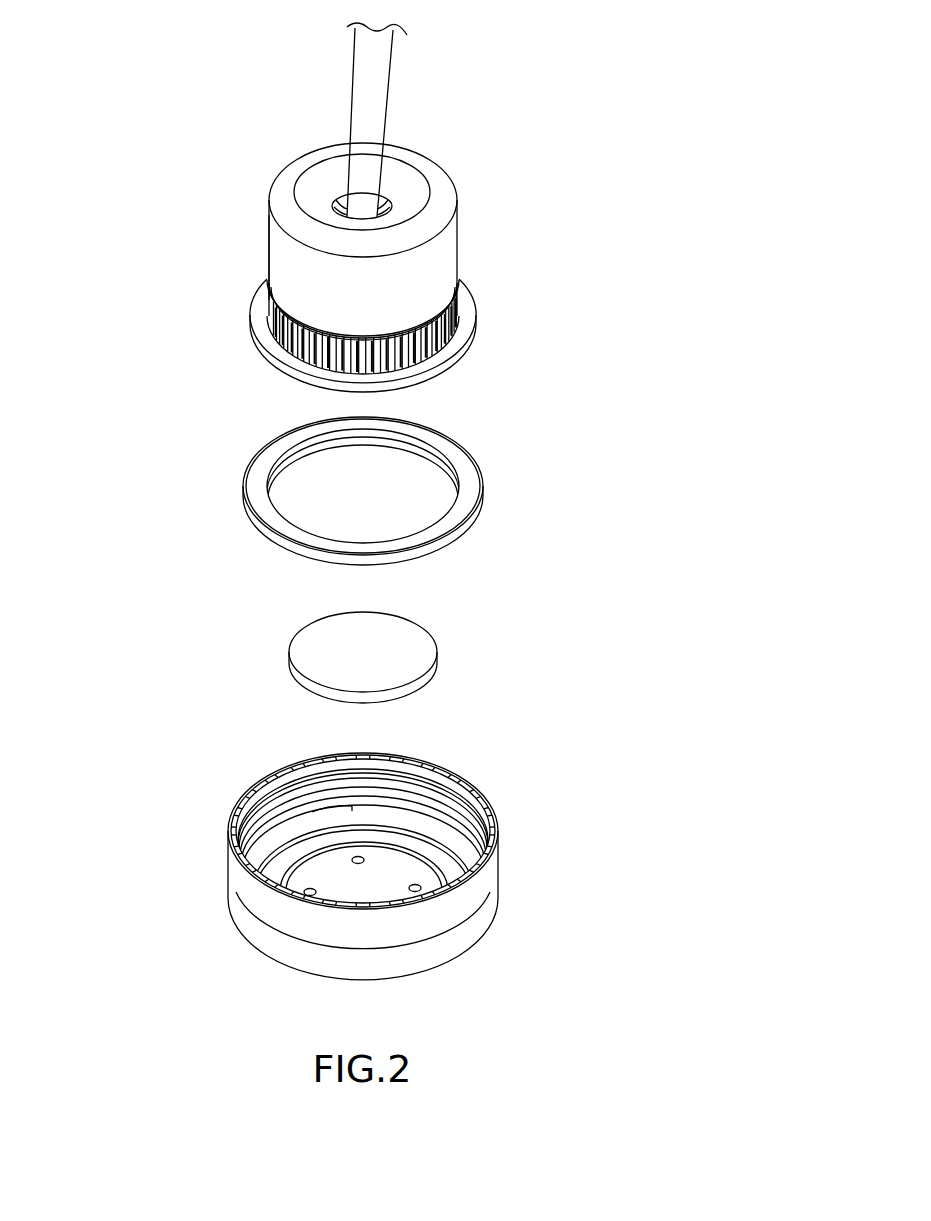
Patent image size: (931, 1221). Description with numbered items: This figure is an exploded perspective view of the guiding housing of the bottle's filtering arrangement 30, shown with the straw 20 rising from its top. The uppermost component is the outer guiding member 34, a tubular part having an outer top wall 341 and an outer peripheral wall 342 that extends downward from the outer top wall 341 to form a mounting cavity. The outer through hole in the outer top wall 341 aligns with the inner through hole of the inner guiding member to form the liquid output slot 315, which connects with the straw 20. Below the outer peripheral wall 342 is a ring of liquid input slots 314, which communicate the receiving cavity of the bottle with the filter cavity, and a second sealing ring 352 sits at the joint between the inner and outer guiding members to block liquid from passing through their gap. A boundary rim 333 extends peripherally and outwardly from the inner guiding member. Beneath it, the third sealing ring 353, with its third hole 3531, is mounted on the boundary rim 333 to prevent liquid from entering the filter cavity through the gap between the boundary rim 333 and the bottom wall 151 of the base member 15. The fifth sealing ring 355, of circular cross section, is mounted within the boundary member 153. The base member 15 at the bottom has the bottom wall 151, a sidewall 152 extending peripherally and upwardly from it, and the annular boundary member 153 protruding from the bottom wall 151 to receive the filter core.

The base member 15 is at (369, 880).
The bottom wall 151 is at (401, 865).
The sidewall 152 is at (329, 968).
The boundary member 153 is at (309, 848).
The straw 20 is at (362, 85).
The filtering arrangement 30 is at (518, 190).
The liquid input slots 314 is at (300, 358).
The liquid output slot 315 is at (395, 188).
The boundary rim 333 is at (490, 328).
The outer guiding member 34 is at (455, 250).
The outer top wall 341 is at (312, 181).
The outer peripheral wall 342 is at (285, 264).
The second sealing ring 352 is at (410, 330).
The third sealing ring 353 is at (440, 491).
The third hole 3531 is at (418, 469).
The fifth sealing ring 355 is at (340, 653).